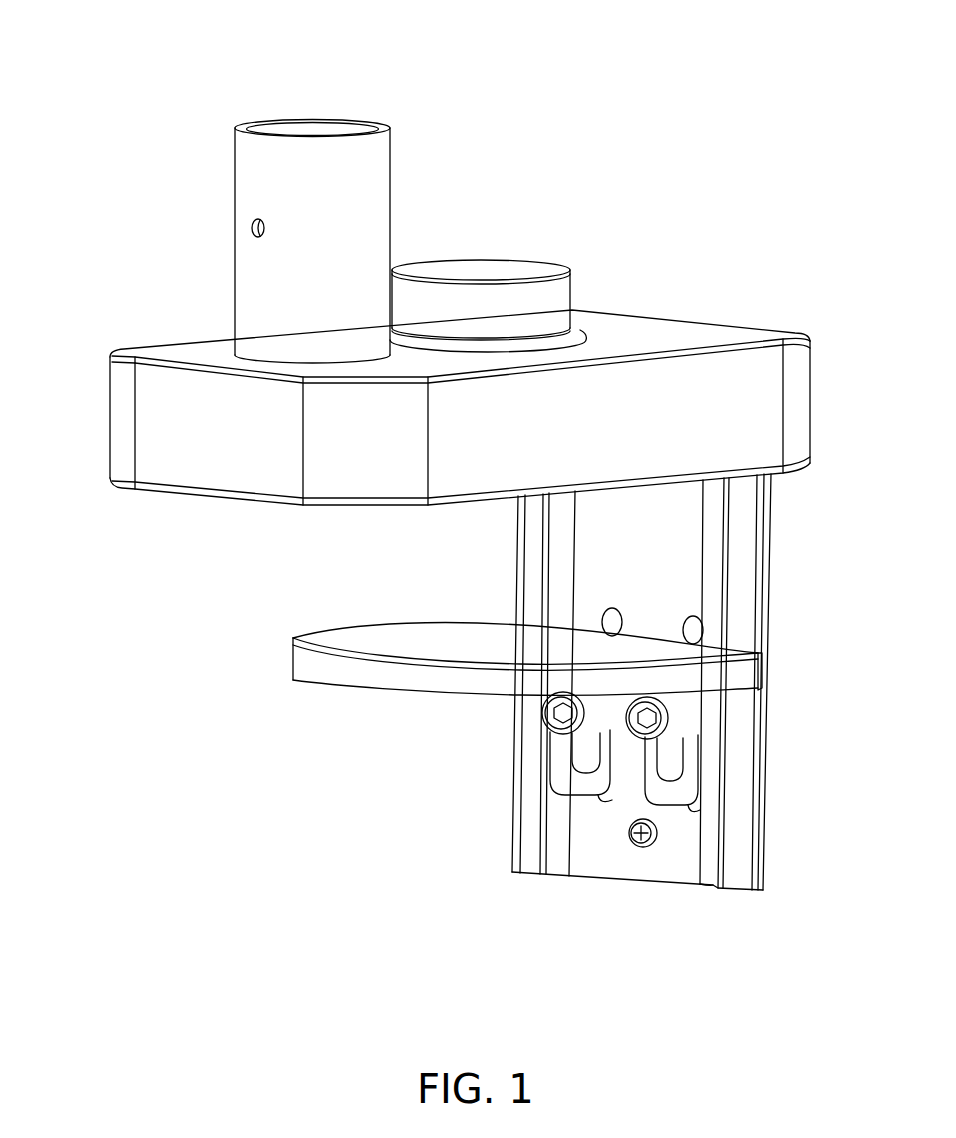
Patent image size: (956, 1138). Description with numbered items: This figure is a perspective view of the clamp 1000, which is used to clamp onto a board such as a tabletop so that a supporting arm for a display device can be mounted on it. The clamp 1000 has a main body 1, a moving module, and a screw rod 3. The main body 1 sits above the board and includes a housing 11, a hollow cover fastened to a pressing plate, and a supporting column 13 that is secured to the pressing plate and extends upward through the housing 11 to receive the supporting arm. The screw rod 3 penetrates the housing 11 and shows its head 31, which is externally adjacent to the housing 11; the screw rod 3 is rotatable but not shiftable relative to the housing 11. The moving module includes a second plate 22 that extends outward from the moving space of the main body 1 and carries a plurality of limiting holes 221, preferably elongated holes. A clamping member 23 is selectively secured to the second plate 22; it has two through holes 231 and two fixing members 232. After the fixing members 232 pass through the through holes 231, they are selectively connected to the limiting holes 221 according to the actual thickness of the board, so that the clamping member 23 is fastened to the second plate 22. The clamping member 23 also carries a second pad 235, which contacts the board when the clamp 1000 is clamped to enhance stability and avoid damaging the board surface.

The clamp 1000 is at (626, 50).
The main body 1 is at (88, 436).
The housing 11 is at (686, 337).
The supporting column 13 is at (252, 177).
The screw rod 3 is at (557, 295).
The head 31 is at (464, 268).
The second plate 22 is at (692, 527).
The limiting holes 221 is at (615, 620).
The clamping member 23 is at (305, 664).
The second pad 235 is at (345, 640).
The fixing members 232 is at (680, 716).
The through holes 231 is at (672, 763).